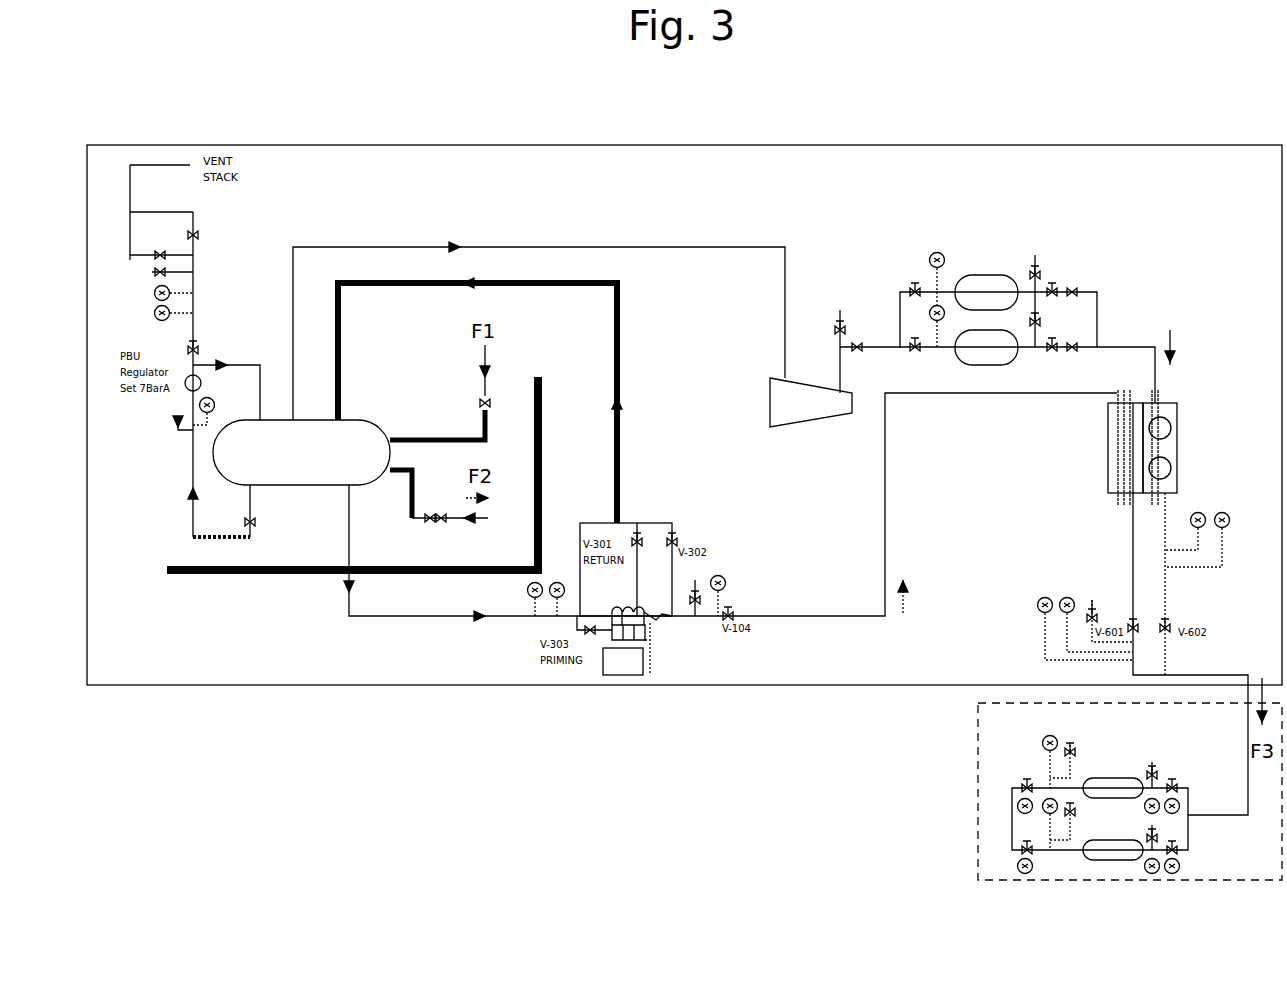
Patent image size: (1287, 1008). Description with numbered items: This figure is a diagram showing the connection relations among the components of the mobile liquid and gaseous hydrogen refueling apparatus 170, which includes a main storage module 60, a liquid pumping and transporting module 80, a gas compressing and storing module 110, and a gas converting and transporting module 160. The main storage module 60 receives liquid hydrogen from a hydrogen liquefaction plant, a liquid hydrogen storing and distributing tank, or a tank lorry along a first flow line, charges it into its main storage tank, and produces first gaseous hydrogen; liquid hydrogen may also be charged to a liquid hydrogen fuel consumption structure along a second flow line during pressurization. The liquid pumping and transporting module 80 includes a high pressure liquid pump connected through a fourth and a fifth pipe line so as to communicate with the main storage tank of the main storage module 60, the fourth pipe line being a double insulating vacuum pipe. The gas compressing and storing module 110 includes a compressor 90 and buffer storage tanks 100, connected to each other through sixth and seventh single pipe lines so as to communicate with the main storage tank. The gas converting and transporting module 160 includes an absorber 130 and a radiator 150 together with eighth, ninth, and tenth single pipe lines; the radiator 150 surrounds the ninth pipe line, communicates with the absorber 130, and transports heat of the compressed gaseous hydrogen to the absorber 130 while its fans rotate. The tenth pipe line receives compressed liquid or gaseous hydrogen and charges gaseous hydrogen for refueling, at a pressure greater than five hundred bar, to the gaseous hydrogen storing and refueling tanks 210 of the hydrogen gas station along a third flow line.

The mobile liquid and gaseous hydrogen refueling apparatus 170 is at (752, 145).
The main storage module 60 is at (293, 472).
The liquid pumping and transporting module 80 is at (652, 656).
The compressor 90 is at (800, 410).
The buffer storage tanks 100 is at (1000, 272).
The gas compressing and storing module 110 is at (998, 287).
The absorber 130 is at (1108, 450).
The radiator 150 is at (1177, 448).
The gas converting and transporting module 160 is at (1208, 447).
The gaseous hydrogen storing and refueling tanks 210 is at (1110, 860).